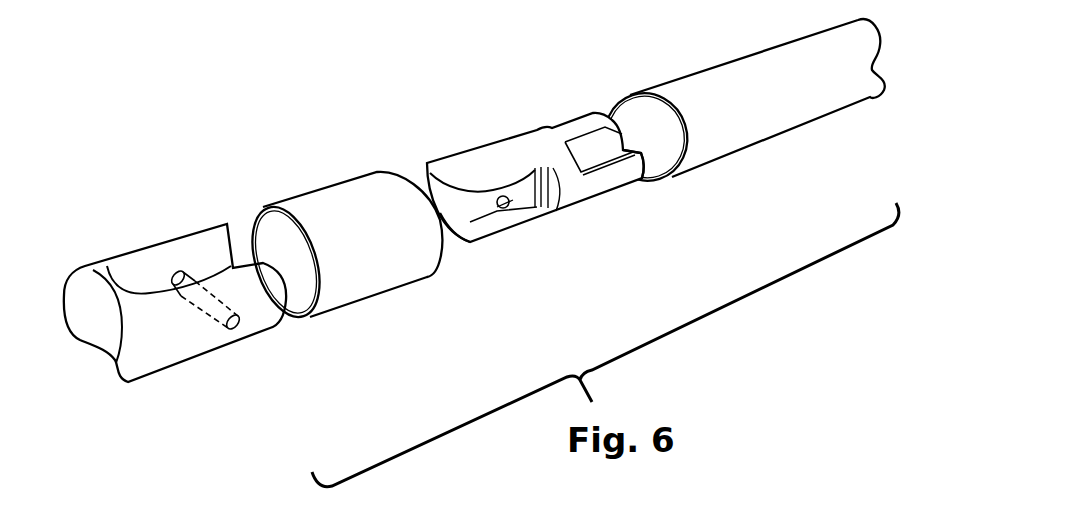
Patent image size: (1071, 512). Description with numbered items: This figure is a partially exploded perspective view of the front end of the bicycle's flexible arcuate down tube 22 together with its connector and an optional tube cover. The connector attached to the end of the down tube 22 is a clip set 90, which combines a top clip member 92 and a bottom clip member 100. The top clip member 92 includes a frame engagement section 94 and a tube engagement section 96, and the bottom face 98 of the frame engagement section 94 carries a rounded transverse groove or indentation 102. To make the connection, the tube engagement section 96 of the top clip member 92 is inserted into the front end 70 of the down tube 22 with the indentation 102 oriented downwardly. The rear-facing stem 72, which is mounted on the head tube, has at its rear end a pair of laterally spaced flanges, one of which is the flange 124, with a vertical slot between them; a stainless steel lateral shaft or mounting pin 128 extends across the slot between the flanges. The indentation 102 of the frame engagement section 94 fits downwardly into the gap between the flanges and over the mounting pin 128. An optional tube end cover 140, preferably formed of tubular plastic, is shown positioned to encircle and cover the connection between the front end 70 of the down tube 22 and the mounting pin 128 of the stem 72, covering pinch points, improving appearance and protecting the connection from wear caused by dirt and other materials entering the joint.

The down tube 22 is at (787, 157).
The front end 70 is at (657, 178).
The rear-facing stem 72 is at (203, 368).
The clip set 90 is at (528, 247).
The top clip member 92 is at (510, 140).
The frame engagement section 94 is at (467, 157).
The tube engagement section 96 is at (572, 125).
The bottom face 98 is at (488, 237).
The bottom clip member 100 is at (460, 253).
The indentation 102 is at (517, 207).
The flange 124 is at (170, 240).
The mounting pin 128 is at (193, 280).
The tube end cover 140 is at (337, 182).